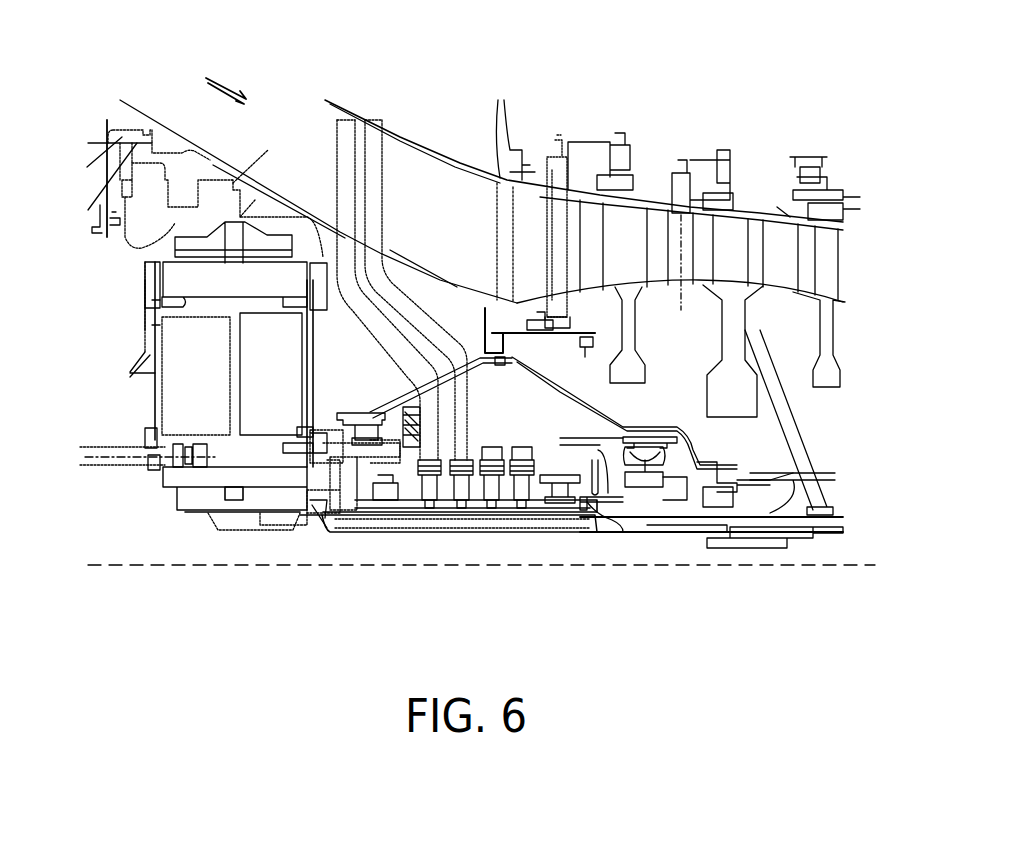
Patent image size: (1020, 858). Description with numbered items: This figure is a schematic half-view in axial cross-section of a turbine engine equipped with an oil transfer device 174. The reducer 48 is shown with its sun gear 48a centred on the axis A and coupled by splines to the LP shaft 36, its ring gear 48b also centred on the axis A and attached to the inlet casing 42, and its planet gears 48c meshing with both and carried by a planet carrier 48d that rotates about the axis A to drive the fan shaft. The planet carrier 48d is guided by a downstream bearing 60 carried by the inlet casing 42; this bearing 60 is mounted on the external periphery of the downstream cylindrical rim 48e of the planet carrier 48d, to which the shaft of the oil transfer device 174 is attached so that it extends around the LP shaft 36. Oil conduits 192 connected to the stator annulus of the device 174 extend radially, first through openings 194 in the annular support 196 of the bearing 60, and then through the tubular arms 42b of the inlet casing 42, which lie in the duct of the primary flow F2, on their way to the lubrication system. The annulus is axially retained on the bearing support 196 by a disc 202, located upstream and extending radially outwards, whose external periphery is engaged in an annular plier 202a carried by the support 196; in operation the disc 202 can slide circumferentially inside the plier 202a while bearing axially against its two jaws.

The primary flow F2 is at (232, 80).
The axis A is at (813, 574).
The inlet casing 42 is at (517, 136).
The tubular arms 42b is at (403, 185).
The reducer 48 is at (148, 408).
The sun gear 48a is at (200, 515).
The ring gear 48b is at (268, 245).
The planet gears 48c is at (150, 288).
The planet carrier 48d is at (318, 358).
The downstream cylindrical rim 48e is at (330, 432).
The LP shaft 36 is at (258, 532).
The bearing 60 is at (368, 410).
The oil transfer device 174 is at (400, 517).
The oil conduit 192 is at (397, 408).
The openings 194 is at (482, 323).
The annular support 196 is at (443, 352).
The disc 202 is at (403, 447).
The annular plier 202a is at (370, 517).